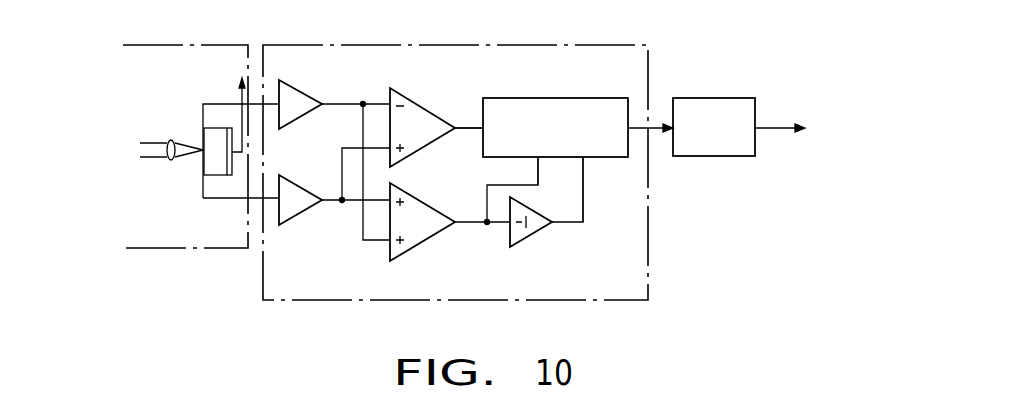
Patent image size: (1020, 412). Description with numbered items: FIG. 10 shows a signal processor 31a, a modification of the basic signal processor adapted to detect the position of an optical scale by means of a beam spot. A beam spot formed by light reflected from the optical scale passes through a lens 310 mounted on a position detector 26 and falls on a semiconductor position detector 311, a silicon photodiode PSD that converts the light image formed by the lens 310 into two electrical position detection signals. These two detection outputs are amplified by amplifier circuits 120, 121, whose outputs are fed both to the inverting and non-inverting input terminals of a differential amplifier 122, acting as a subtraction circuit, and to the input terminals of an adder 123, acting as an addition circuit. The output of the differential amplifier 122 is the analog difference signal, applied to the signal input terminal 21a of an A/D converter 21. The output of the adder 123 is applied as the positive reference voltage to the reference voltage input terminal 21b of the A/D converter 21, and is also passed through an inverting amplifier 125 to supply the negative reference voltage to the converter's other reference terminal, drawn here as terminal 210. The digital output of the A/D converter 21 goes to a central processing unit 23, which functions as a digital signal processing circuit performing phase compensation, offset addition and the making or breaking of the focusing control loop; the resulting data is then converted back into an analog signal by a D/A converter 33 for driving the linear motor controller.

The position detector 26 is at (237, 43).
The signal processor 31a is at (598, 43).
The lens 310 is at (172, 162).
The semiconductor position detector 311 is at (218, 176).
The amplifier circuit 120 is at (305, 98).
The amplifier circuit 121 is at (303, 195).
The differential amplifier 122 is at (418, 110).
The adder 123 is at (425, 232).
The inverting amplifier 125 is at (535, 232).
The A/D converter 21 is at (560, 97).
The signal input terminal 21a is at (472, 103).
The reference voltage input terminal 21b is at (540, 163).
The Vref- reference terminal 210 is at (585, 165).
The central processing unit 23 is at (705, 97).
The D/A converter 33 is at (806, 123).